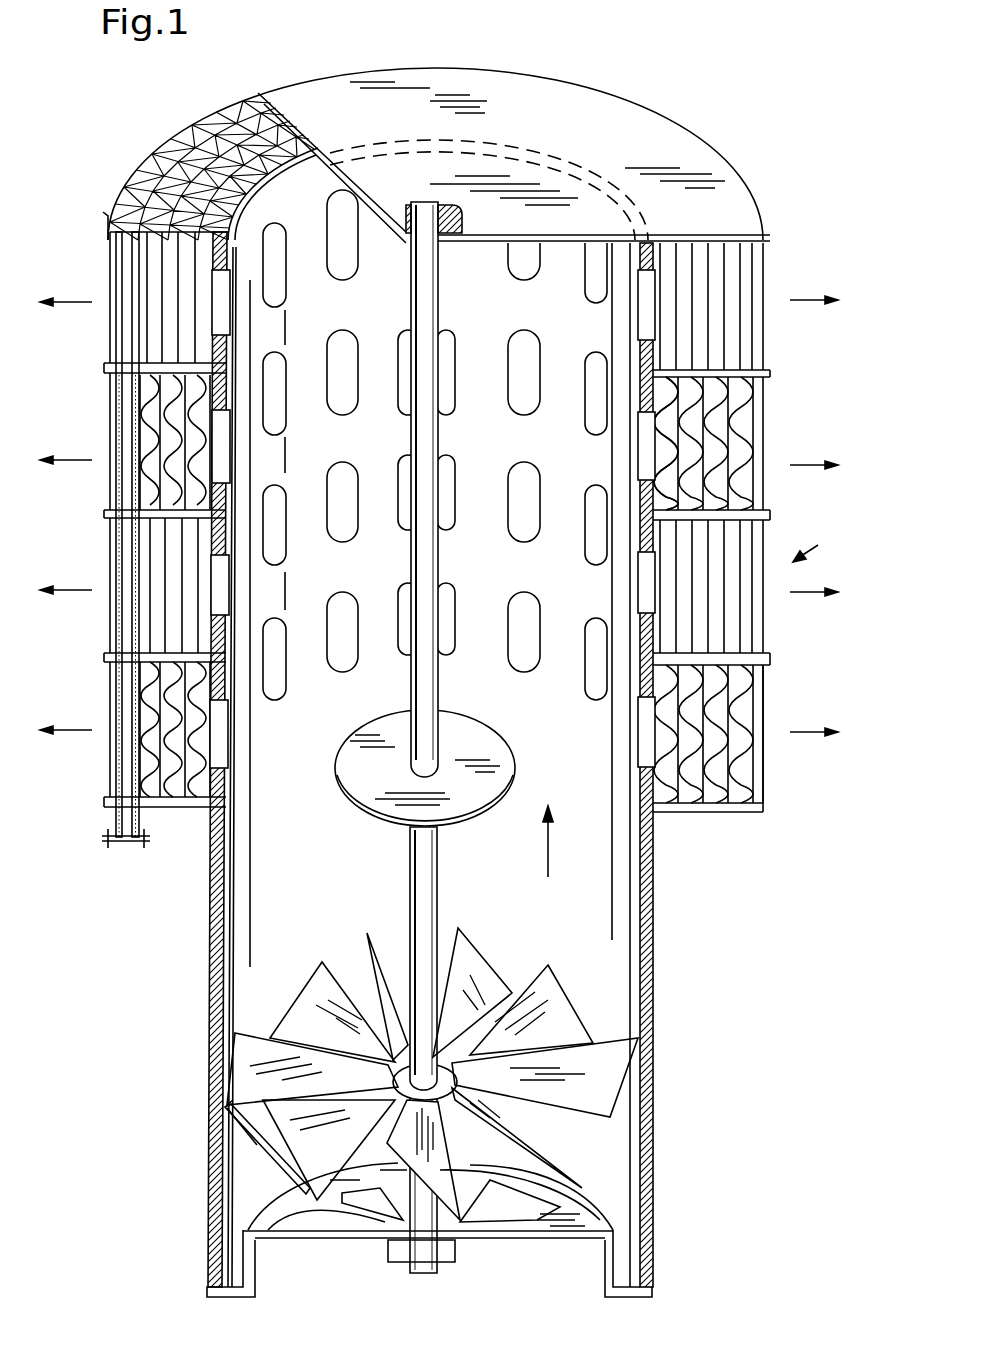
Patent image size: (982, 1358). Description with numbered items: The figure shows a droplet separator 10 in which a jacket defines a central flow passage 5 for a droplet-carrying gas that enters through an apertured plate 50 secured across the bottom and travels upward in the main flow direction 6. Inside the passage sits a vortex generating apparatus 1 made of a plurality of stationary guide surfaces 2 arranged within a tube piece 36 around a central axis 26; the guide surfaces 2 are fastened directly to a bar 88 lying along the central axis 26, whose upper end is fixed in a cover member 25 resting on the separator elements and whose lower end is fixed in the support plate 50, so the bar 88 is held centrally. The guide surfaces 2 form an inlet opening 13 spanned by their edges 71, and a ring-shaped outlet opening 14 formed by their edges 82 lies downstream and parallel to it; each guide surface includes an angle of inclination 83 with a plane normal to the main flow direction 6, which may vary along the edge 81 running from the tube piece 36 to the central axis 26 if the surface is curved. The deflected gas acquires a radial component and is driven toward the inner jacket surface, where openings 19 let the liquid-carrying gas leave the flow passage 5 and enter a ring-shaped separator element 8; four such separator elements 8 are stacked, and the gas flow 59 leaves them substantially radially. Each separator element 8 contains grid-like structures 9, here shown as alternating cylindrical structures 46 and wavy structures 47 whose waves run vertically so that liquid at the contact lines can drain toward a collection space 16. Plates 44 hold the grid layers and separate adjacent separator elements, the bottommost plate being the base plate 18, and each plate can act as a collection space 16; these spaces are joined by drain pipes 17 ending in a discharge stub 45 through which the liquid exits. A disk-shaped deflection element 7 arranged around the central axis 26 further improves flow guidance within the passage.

The vortex generating apparatus 1 is at (617, 1063).
The stationary guide surfaces 2 is at (548, 990).
The central flow passage 5 is at (648, 913).
The main flow direction 6 is at (553, 855).
The deflection element 7 is at (353, 788).
The separator element 8 is at (703, 720).
The grid-like structures 9 is at (718, 778).
The droplet separator 10 is at (820, 550).
The inlet opening 13 is at (257, 1145).
The ring-shaped outlet opening 14 is at (260, 1050).
The collection space 16 is at (735, 806).
The drain pipes 17 is at (118, 693).
The base plate 18 is at (665, 806).
The openings 19 is at (610, 370).
The cover member 25 is at (693, 165).
The central axis 26 is at (432, 305).
The tube piece 36 is at (647, 1115).
The plate 44 is at (722, 658).
The discharge stub 45 is at (108, 836).
The cylindrical structures 46 is at (743, 472).
The wavy structures 47 is at (747, 447).
The apertured plate 50 is at (515, 1237).
The gas flow 59 is at (783, 305).
The edges of the guide surfaces 71 is at (225, 1108).
The edge 81 is at (328, 1203).
The edges of the guide surfaces 82 is at (527, 977).
The angle of inclination 83 is at (282, 1152).
The bar 88 is at (440, 890).